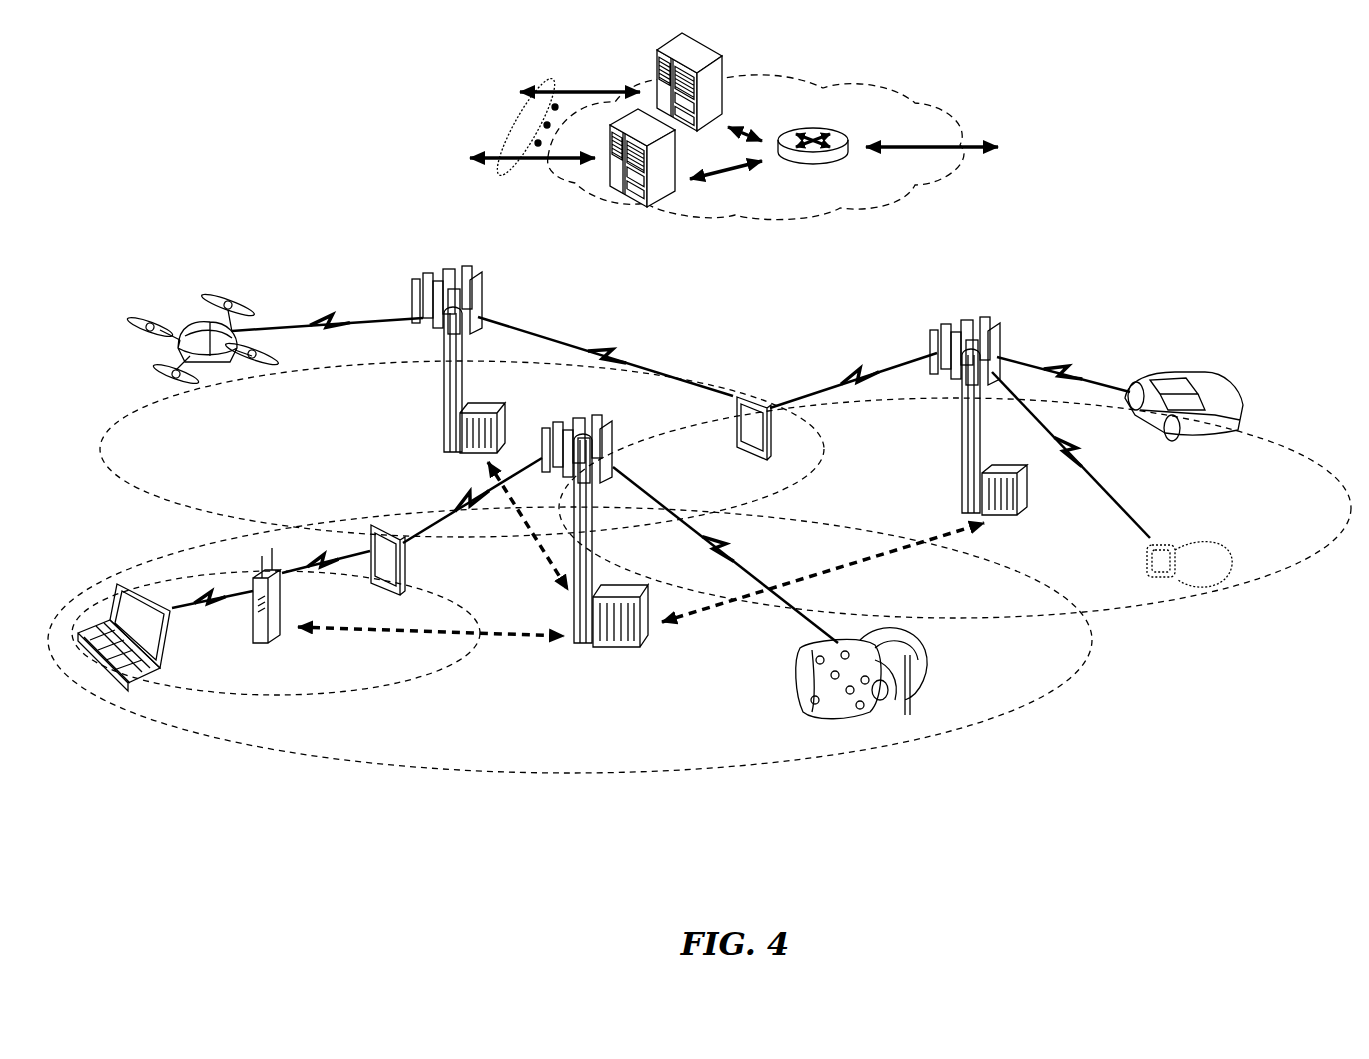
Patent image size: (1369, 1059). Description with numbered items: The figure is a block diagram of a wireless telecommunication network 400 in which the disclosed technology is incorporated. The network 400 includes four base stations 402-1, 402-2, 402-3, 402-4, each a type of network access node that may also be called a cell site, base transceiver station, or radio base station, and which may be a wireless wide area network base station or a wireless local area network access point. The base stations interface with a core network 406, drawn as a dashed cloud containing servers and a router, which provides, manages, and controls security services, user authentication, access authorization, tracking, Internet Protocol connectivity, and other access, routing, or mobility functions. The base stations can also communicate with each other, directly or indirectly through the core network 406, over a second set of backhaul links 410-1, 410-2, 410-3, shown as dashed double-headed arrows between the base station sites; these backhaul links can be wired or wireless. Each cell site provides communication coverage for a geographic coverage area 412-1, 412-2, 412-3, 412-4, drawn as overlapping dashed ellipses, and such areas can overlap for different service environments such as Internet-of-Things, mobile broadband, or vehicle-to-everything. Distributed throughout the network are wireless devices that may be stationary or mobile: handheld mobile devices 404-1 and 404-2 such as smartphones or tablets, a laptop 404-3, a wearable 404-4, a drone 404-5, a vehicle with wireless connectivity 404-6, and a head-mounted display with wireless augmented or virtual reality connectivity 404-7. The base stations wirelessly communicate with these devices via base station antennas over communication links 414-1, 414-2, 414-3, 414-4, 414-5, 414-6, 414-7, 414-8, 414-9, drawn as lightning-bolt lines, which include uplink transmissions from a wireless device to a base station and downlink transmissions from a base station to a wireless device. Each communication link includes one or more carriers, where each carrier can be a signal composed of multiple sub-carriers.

The wireless telecommunication network 400 is at (1260, 138).
The base station 402-1 is at (580, 648).
The base station 402-2 is at (446, 400).
The base station 402-3 is at (962, 432).
The base station 402-4 is at (255, 632).
The handheld mobile device 404-1 is at (412, 575).
The handheld mobile device 404-2 is at (735, 430).
The laptop 404-3 is at (100, 665).
The wearable 404-4 is at (1168, 538).
The drone 404-5 is at (215, 365).
The vehicle with wireless connectivity 404-6 is at (1210, 385).
The head-mounted display 404-7 is at (920, 672).
The core network 406 is at (850, 215).
The backhaul link 410-1 is at (322, 632).
The backhaul link 410-2 is at (885, 573).
The backhaul link 410-3 is at (540, 555).
The geographic coverage area 412-1 is at (500, 775).
The geographic coverage area 412-2 is at (380, 695).
The geographic coverage area 412-3 is at (162, 505).
The geographic coverage area 412-4 is at (1275, 437).
The communication link 414-1 is at (740, 556).
The communication link 414-2 is at (466, 507).
The communication link 414-3 is at (182, 605).
The communication link 414-4 is at (322, 567).
The communication link 414-5 is at (322, 316).
The communication link 414-6 is at (620, 352).
The communication link 414-7 is at (856, 372).
The communication link 414-8 is at (1103, 440).
The communication link 414-9 is at (1068, 365).